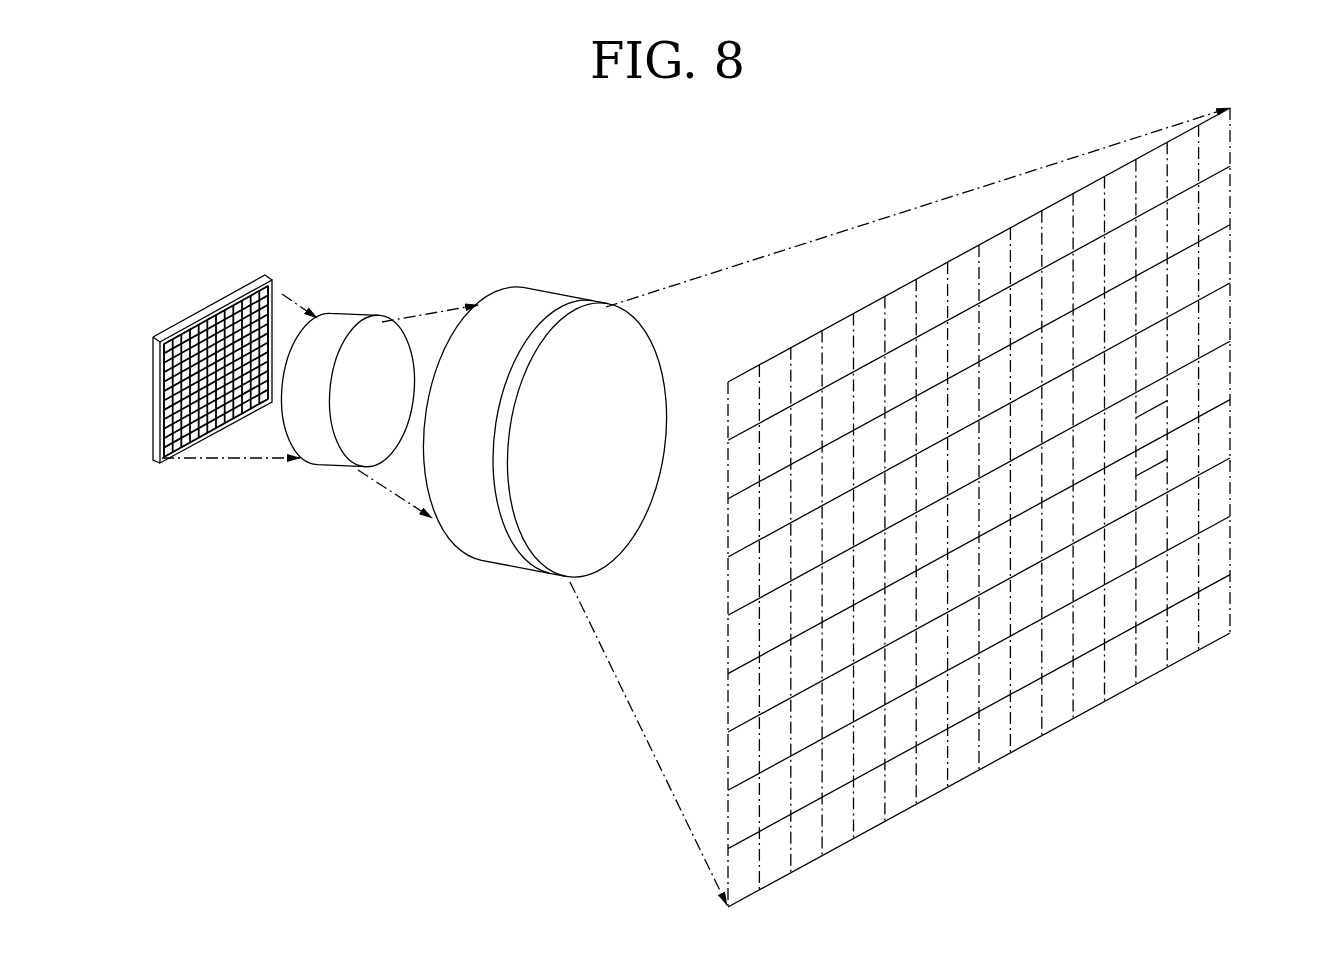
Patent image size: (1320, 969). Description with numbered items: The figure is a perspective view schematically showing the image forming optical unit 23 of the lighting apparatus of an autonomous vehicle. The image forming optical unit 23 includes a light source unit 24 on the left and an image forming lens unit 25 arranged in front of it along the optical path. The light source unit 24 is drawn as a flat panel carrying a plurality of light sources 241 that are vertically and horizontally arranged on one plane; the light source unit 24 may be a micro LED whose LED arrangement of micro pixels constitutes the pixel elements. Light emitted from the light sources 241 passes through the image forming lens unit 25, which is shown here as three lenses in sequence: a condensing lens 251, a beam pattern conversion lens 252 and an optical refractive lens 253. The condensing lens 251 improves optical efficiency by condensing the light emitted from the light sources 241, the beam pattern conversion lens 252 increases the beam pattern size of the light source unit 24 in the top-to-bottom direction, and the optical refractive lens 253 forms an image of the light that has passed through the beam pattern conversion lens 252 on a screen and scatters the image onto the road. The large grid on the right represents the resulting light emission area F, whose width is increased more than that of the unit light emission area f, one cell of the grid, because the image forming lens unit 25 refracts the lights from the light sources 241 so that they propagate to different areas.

The image forming optical unit 23 is at (510, 155).
The light source unit 24 is at (279, 305).
The light sources 241 is at (232, 310).
The image forming lens unit 25 is at (545, 283).
The condensing lens 251 is at (352, 427).
The beam pattern conversion lens 252 is at (460, 528).
The optical refractive lens 253 is at (547, 535).
The light emission area F is at (965, 777).
The unit light emission area f is at (1147, 353).